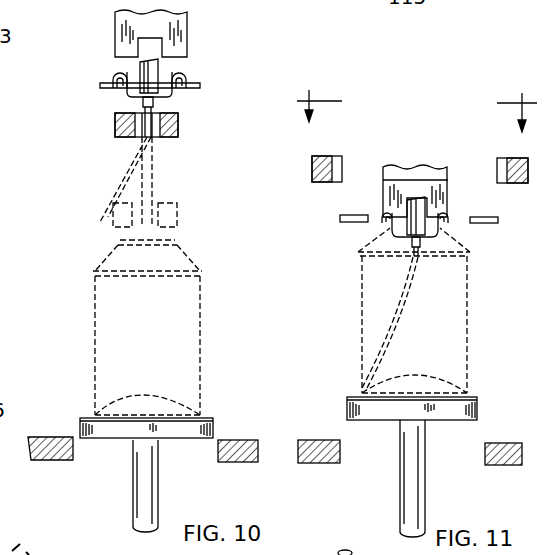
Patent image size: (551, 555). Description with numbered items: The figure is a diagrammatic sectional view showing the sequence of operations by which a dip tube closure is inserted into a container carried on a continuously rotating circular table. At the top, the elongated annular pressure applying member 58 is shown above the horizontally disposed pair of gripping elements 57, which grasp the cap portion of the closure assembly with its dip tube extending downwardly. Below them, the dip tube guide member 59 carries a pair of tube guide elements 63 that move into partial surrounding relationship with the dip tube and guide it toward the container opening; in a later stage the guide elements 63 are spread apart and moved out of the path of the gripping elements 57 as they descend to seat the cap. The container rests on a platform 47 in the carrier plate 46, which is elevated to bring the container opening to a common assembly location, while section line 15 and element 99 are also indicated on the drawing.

In FIG. 11, the section line 15- 15 is at (417, 123).
In FIG. 10, the carrier plate 46 is at (229, 440).
In FIG. 11, the carrier plate 46 is at (490, 443).
In FIG. 10, the platform 47 is at (213, 420).
In FIG. 11, the platform 47 is at (478, 402).
In FIG. 11, the gripping elements 57 is at (340, 218).
In FIG. 10, the pressure applying member 58 is at (190, 46).
In FIG. 11, the pressure applying member 58 is at (420, 186).
In FIG. 10, the dip tube guide member 59 is at (177, 210).
In FIG. 10, the tube guide elements 63 is at (178, 129).
In FIG. 11, the tube guide elements 63 is at (312, 176).
In FIG. 11, the lower member 99 is at (340, 550).